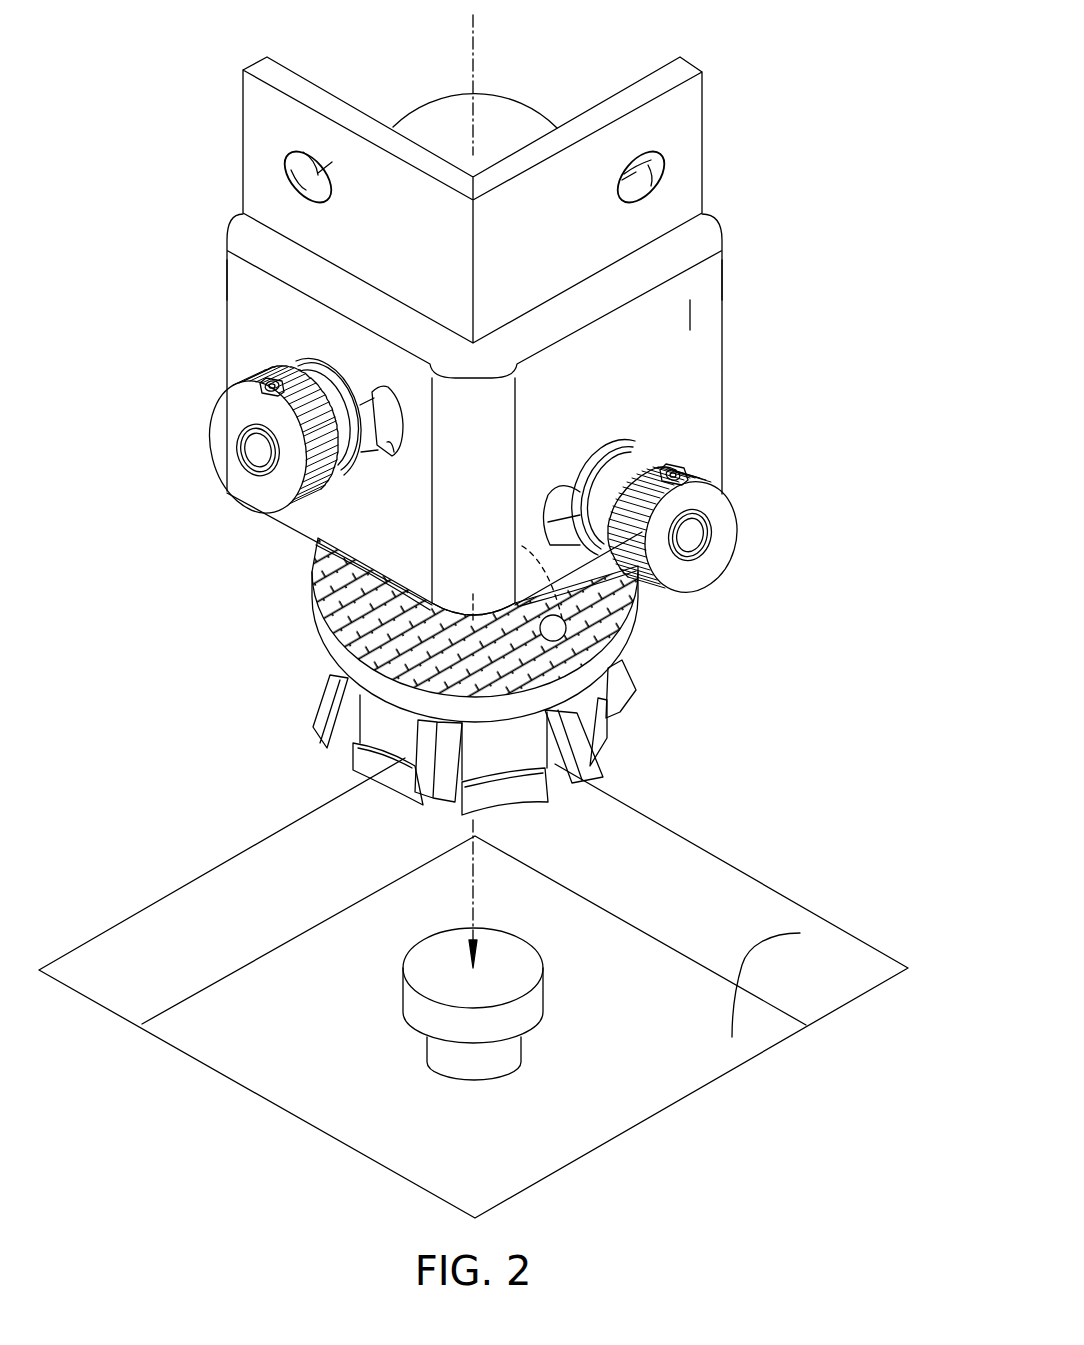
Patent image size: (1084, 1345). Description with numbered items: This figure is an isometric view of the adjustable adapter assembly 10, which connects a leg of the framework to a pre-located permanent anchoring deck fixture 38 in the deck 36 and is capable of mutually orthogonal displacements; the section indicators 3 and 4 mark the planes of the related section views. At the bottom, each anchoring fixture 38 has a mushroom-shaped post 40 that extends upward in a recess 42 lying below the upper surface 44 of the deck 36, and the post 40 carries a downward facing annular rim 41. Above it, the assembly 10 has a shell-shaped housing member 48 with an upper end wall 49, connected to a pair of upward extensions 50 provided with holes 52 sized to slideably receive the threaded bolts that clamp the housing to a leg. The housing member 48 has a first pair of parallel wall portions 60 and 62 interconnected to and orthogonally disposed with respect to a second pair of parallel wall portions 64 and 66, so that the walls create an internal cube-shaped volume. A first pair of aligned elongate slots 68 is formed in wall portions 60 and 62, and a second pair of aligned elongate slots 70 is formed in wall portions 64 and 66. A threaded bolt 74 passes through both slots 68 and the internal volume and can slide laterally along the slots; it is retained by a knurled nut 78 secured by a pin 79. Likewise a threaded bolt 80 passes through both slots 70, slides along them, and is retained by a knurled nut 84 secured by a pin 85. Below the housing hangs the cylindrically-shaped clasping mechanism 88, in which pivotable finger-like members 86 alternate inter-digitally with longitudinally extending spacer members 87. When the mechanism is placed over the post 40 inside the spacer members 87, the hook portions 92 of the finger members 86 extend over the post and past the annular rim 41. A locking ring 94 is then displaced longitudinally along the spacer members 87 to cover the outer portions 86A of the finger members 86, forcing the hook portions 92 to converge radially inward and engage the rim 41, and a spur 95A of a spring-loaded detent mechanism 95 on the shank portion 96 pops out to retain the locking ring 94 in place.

The adjustable adapter assembly 10 is at (835, 128).
The section line 3 is at (497, 0).
The section line 4 is at (450, 0).
The deck 36 is at (504, 979).
The anchoring deck fixture 38 is at (792, 860).
The mushroom-shaped post 40 is at (531, 1004).
The annular rim 41 is at (534, 1033).
The recess 42 is at (800, 933).
The upper surface 44 is at (788, 1122).
The housing member 48 is at (745, 247).
The upper end wall 49 is at (430, 132).
The upward extensions 50 is at (258, 107).
The holes 52 is at (298, 184).
The parallel wall portion 60 is at (252, 322).
The parallel wall portion 62 is at (722, 275).
The parallel wall portion 64 is at (225, 254).
The parallel wall portion 66 is at (688, 312).
The elongate slots 68 is at (388, 450).
The elongate slots 70 is at (557, 516).
The threaded bolt 74 is at (258, 450).
The knurled nut 78 is at (238, 388).
The pin 79 is at (272, 382).
The threaded bolt 80 is at (702, 548).
The knurled nut 84 is at (712, 428).
The pin 85 is at (674, 475).
The pivotable finger-like members 86 is at (488, 752).
The outer portions 86A is at (640, 686).
The spacer members 87 is at (605, 728).
The clasping mechanism 88 is at (665, 609).
The hook portions 92 is at (554, 628).
The locking ring 94 is at (308, 593).
The spring-loaded detent mechanism 95 is at (505, 574).
The spur 95A is at (522, 546).
The shank portion 96 is at (330, 551).